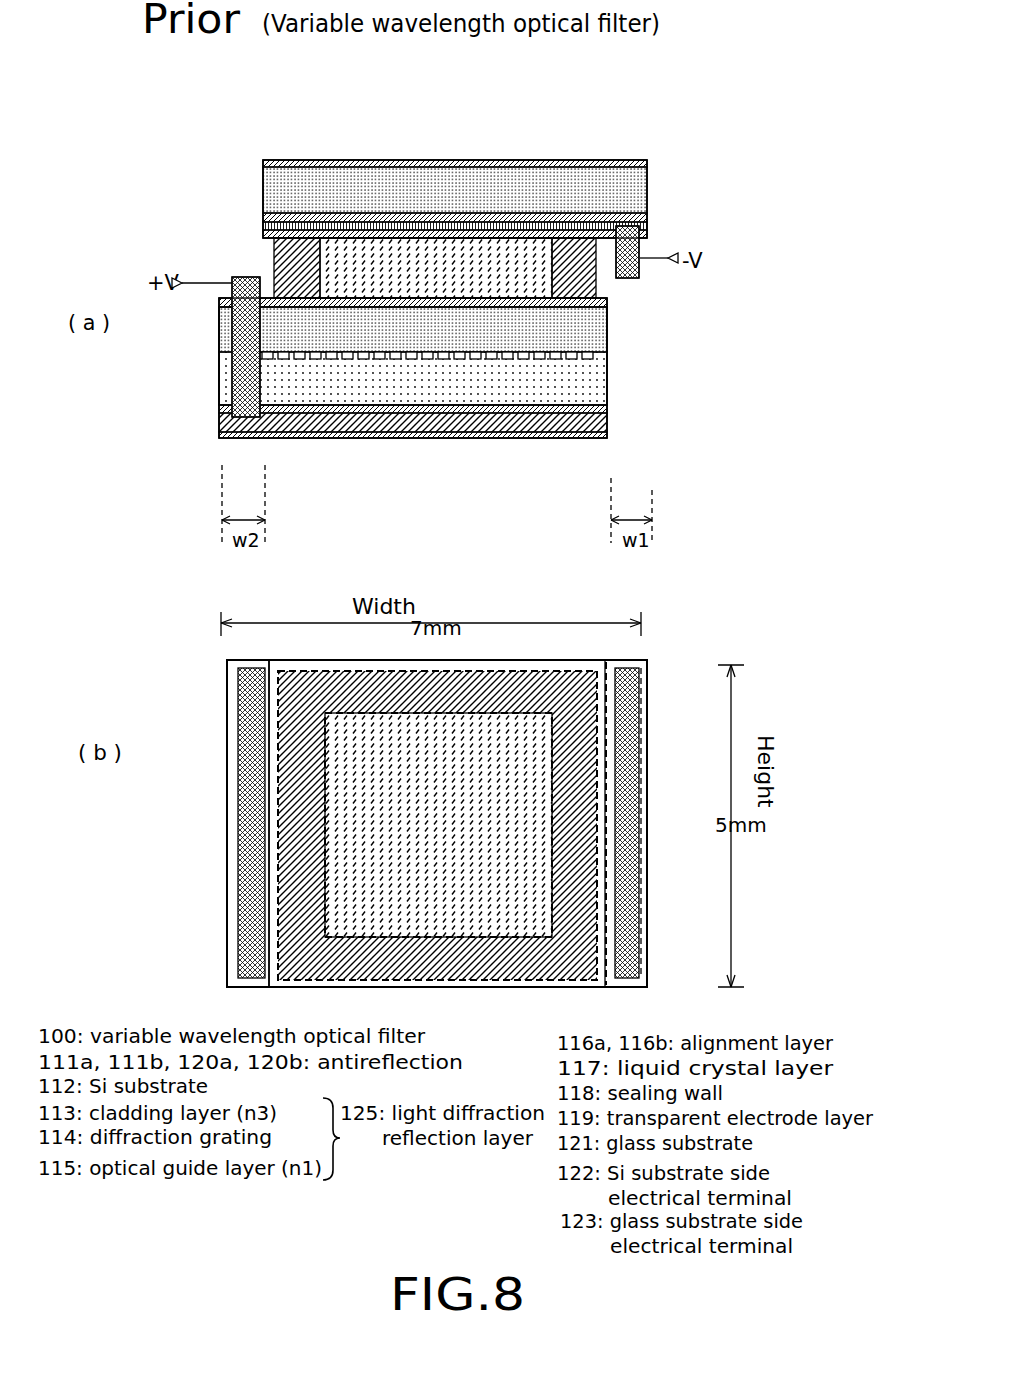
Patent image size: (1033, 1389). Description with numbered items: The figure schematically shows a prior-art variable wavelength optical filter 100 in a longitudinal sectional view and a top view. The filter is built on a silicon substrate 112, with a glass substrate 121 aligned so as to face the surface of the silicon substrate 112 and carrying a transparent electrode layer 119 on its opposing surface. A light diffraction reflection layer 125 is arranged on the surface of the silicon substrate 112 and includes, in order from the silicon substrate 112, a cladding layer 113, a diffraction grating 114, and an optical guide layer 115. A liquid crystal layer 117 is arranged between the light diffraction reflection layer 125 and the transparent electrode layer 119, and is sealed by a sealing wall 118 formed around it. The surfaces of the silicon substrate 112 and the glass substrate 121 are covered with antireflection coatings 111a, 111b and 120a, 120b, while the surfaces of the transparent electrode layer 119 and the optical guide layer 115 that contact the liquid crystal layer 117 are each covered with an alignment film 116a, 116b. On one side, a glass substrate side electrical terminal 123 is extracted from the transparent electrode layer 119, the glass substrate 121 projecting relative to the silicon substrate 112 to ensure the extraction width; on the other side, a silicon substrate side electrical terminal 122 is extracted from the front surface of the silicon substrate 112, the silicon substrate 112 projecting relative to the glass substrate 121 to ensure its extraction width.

The variable wavelength optical filter 100 is at (354, 127).
The antireflection coating 111a is at (600, 438).
The antireflection coating 111b is at (587, 409).
The silicon substrate 112 is at (577, 420).
The cladding layer 113 is at (577, 377).
The diffraction grating 114 is at (563, 357).
The optical guide layer 115 is at (557, 334).
The alignment film 116a is at (312, 308).
The alignment film 116b is at (337, 233).
The liquid crystal layer 117 is at (403, 261).
The sealing wall 118 is at (583, 284).
The transparent electrode layer 119 is at (277, 225).
The antireflection coating 120a is at (305, 216).
The antireflection coating 120b is at (287, 163).
The glass substrate 121 is at (288, 192).
The silicon substrate side electrical terminal 122 is at (242, 372).
The glass substrate side electrical terminal 123 is at (632, 268).
The light diffraction reflection layer 125 is at (690, 332).